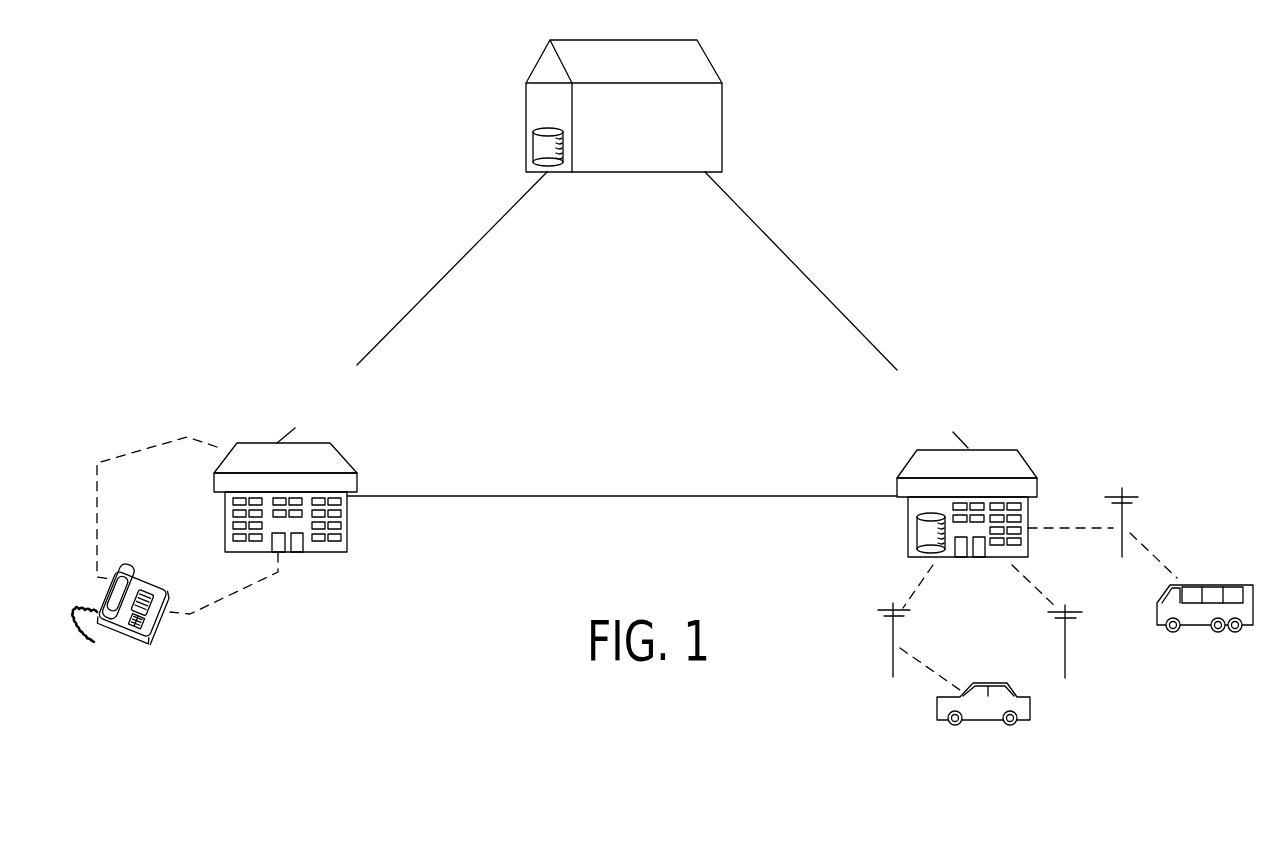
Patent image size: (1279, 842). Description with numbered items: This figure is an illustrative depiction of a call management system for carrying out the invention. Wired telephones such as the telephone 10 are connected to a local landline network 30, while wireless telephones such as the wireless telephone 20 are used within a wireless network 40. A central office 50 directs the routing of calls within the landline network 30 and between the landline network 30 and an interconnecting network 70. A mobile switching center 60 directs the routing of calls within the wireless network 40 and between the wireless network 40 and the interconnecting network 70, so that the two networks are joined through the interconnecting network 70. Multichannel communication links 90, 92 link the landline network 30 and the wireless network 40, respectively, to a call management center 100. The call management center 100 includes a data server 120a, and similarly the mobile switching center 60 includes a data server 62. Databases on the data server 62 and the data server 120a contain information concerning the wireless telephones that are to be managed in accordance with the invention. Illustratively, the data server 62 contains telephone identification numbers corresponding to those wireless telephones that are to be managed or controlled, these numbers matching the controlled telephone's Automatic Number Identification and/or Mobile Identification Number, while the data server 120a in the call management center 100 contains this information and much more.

The telephone 10 is at (145, 637).
The wireless telephone 20 is at (988, 727).
The local landline network 30 is at (233, 598).
The wireless network 40 is at (1027, 589).
The central office 50 is at (347, 543).
The mobile switching center 60 is at (1033, 468).
The data server 62 is at (908, 530).
The interconnecting network 70 is at (622, 525).
The multichannel communication link 90 is at (452, 268).
The multichannel communication link 92 is at (801, 271).
The call management center 100 is at (654, 104).
The data server 120a is at (533, 153).